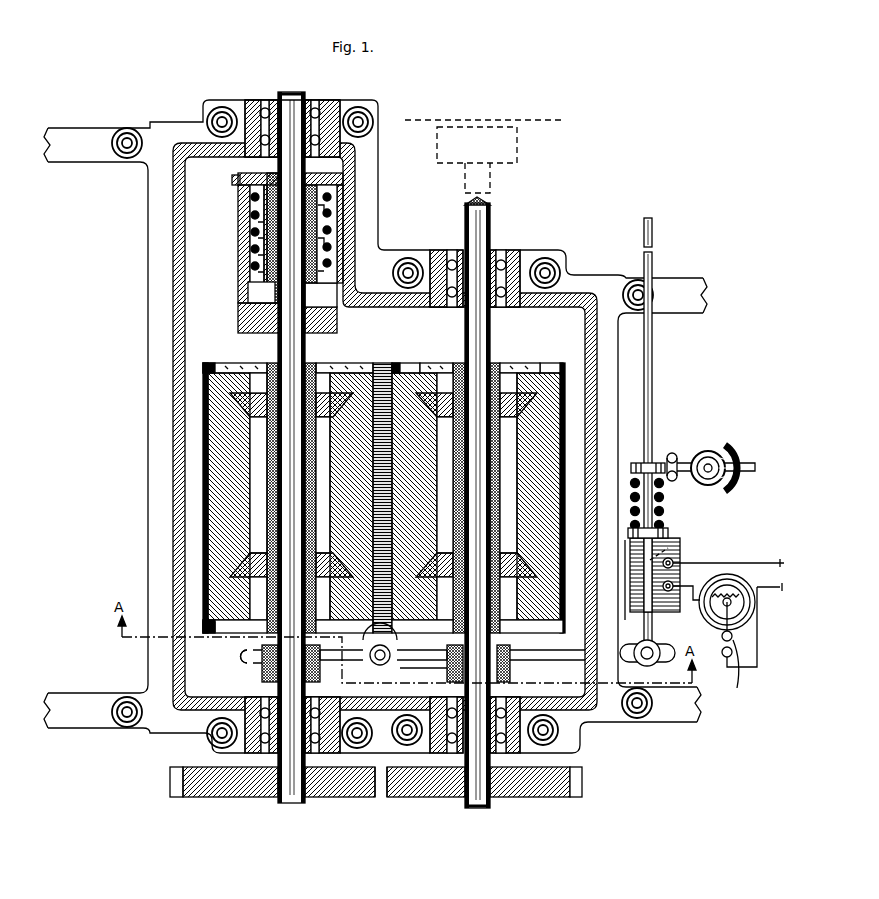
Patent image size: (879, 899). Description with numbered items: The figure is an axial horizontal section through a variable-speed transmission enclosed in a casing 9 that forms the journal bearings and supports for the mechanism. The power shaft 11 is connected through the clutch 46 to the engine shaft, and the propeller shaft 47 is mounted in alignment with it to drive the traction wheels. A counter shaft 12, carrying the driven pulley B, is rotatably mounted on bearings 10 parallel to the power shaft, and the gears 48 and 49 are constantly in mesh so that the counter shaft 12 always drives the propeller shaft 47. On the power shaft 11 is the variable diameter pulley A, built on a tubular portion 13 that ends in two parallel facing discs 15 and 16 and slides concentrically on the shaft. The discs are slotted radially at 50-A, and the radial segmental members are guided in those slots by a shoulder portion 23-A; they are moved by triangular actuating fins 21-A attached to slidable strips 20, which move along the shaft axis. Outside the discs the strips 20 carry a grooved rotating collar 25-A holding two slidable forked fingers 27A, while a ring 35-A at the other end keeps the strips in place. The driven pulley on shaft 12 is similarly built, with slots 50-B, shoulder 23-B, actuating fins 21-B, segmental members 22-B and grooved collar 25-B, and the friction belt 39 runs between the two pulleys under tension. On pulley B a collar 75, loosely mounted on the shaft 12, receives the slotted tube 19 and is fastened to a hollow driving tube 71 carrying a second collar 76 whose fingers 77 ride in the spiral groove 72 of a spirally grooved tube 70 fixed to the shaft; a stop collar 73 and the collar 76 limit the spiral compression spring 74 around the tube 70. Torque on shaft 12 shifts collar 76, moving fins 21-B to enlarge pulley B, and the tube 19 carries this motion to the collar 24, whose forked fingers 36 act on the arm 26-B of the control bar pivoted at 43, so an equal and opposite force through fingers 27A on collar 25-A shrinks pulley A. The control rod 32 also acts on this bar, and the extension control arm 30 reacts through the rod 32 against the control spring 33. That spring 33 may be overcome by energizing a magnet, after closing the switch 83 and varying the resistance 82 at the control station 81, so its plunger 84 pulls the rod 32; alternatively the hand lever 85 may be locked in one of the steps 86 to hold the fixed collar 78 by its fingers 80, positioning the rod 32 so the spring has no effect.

The casing 9 is at (580, 690).
The bearings 10 is at (318, 106).
The power shaft 11 is at (486, 320).
The counter shaft 12 is at (292, 806).
The tubular portion 13 is at (497, 363).
The disc 15 is at (380, 363).
The disc 16 is at (520, 628).
The slotted tube 19 is at (312, 362).
The slidable strips 20 is at (406, 343).
The triangular actuating fins 21-A is at (535, 400).
The actuating fins 21-B is at (232, 395).
The segmental members 22-B is at (215, 503).
The shoulder portion 23-A is at (530, 362).
The shoulder portion 23-B is at (203, 370).
The collar 24 is at (365, 655).
The grooved rotating collar 25-A is at (509, 668).
The grooved rotating collar 25-B is at (262, 668).
The control bar arm 26-B is at (318, 670).
The forked fingers 27A is at (426, 684).
The extension control arm 30 is at (624, 660).
The control rod 32 is at (653, 418).
The control spring 33 is at (664, 507).
The ring 35-A is at (457, 362).
The forked fingers 36 is at (262, 680).
The friction belt 39 is at (210, 449).
The pivot 43 is at (420, 662).
The clutch 46 is at (492, 170).
The propeller shaft 47 is at (490, 808).
The gear 48 is at (566, 797).
The gear 49 is at (214, 797).
The radial slots 50-A is at (445, 362).
The radial slots 50-B is at (255, 363).
The spirally grooved tube 70 is at (252, 265).
The hollow driving tube 71 is at (236, 178).
The spiral groove 72 is at (250, 232).
The stop collar 73 is at (261, 292).
The spiral compression spring 74 is at (336, 228).
The collar 75 is at (238, 320).
The second collar 76 is at (256, 180).
The fingers 77 is at (240, 200).
The fixed collar 78 is at (655, 466).
The fingers 80 is at (675, 478).
The control station 81 is at (742, 610).
The resistance 82 is at (713, 583).
The switch 83 is at (737, 690).
The plunger 84 is at (680, 552).
The hand lever 85 is at (740, 458).
The steps 86 is at (736, 484).